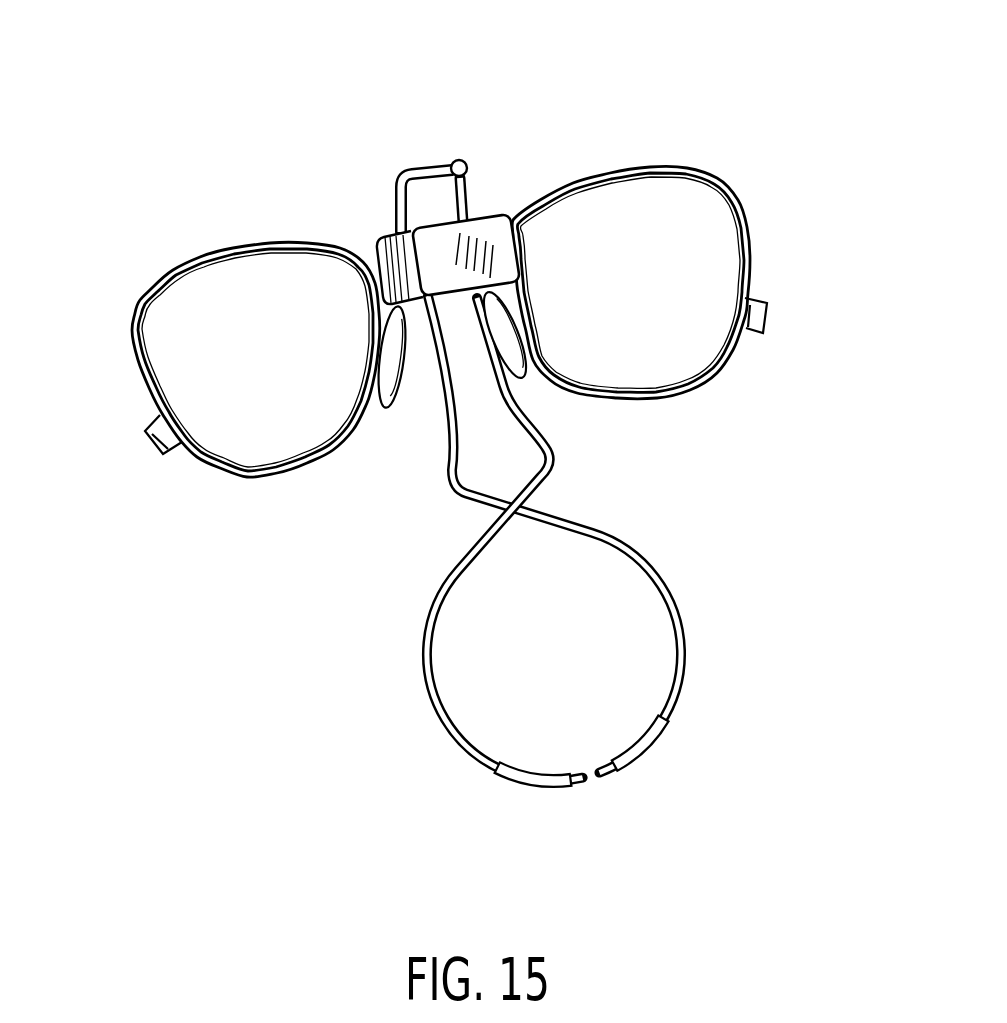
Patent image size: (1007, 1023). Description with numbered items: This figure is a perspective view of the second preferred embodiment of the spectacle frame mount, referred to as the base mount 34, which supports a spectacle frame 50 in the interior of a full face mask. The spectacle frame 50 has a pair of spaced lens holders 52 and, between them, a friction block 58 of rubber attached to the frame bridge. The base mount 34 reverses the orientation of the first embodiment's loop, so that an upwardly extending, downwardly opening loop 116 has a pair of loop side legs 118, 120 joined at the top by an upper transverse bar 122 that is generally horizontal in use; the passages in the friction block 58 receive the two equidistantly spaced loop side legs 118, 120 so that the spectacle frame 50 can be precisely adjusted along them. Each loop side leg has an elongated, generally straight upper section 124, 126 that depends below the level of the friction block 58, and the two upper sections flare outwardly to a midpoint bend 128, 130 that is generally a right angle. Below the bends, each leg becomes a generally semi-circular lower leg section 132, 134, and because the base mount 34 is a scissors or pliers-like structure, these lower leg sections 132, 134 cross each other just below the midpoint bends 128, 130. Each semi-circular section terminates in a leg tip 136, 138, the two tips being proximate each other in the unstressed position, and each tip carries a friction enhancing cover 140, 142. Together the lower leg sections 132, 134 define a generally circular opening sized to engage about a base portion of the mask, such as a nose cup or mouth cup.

The base mount 34 is at (810, 145).
The spectacle frame 50 is at (215, 484).
The lens holders 52 is at (146, 387).
The friction block 58 is at (520, 258).
The upwardly extending, downwardly opening loop 116 is at (378, 181).
The loop side leg 118 is at (395, 212).
The loop side leg 120 is at (481, 192).
The upper transverse bar 122 is at (442, 162).
The upper section 124 is at (397, 407).
The upper section 126 is at (547, 392).
The midpoint bend 128 is at (440, 500).
The midpoint bend 130 is at (560, 477).
The lower leg section 132 is at (685, 620).
The lower leg section 134 is at (425, 650).
The leg tip 136 is at (599, 779).
The leg tip 138 is at (585, 781).
The friction enhancing cover 140 is at (640, 757).
The friction enhancing cover 142 is at (530, 772).